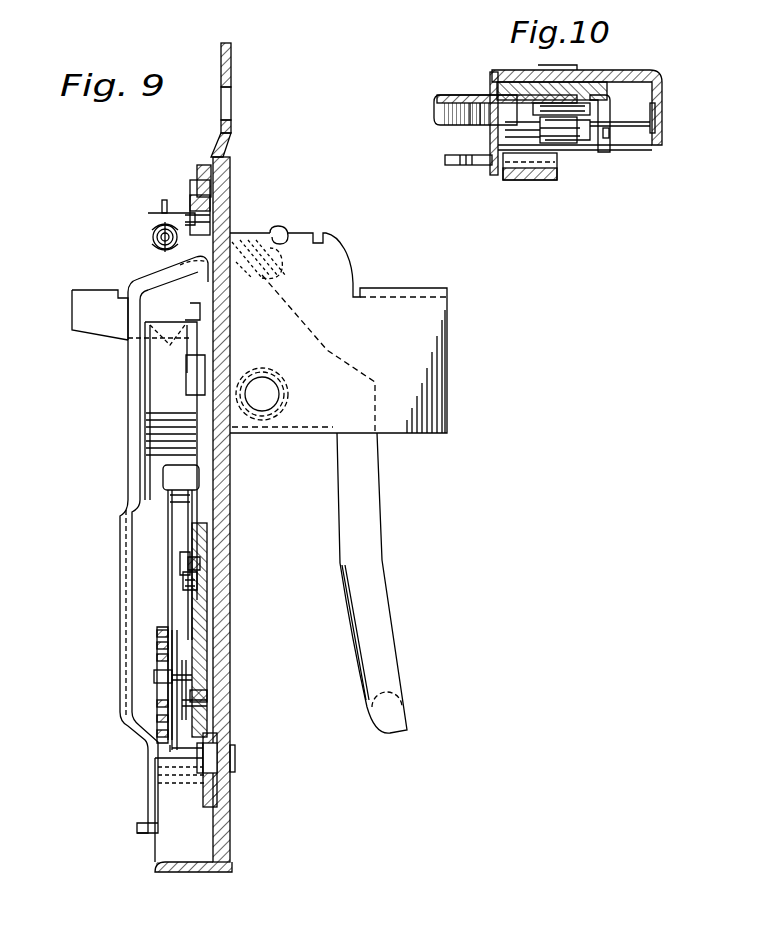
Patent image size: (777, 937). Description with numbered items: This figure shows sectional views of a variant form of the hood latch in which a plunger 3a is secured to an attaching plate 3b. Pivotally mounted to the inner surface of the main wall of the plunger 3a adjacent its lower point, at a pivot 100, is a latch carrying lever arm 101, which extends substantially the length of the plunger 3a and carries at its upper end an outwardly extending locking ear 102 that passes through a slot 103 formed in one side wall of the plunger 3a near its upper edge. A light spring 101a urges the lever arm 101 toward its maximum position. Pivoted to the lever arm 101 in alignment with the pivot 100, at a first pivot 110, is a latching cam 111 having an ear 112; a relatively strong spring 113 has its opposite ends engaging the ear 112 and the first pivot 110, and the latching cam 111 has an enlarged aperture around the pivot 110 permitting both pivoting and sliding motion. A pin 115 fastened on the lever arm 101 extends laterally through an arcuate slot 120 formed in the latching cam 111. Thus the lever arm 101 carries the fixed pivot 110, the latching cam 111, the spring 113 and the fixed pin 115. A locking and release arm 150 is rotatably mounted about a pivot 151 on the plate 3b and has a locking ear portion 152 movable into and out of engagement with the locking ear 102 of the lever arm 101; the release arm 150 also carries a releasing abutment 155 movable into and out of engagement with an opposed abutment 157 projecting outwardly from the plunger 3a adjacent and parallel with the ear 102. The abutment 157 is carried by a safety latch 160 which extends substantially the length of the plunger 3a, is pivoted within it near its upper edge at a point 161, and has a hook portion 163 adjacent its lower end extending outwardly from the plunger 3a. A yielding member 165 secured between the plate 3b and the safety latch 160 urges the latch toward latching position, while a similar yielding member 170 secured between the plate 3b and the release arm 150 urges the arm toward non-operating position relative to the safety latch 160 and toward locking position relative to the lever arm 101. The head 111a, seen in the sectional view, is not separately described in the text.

In FIG. 9, the plunger 3a is at (232, 838).
In FIG. 10, the plunger 3a is at (660, 70).
In FIG. 9, the attaching plate 3b is at (232, 331).
In FIG. 9, the pivot 100 is at (215, 758).
In FIG. 9, the lever arm 101 is at (207, 600).
In FIG. 10, the lever arm 101 is at (598, 80).
In FIG. 9, the light spring 101a is at (170, 752).
In FIG. 10, the light spring 101a is at (636, 120).
In FIG. 9, the locking ear 102 is at (220, 310).
In FIG. 9, the slot 103 is at (197, 365).
In FIG. 9, the pivot 110 is at (157, 672).
In FIG. 10, the pivot 110 is at (566, 145).
In FIG. 9, the latching cam 111 is at (192, 523).
In FIG. 10, the latching cam 111 is at (453, 95).
In FIG. 10, the slide bar head 111a is at (432, 113).
In FIG. 10, the ear 112 is at (603, 150).
In FIG. 9, the spring 113 is at (160, 627).
In FIG. 10, the spring 113 is at (585, 130).
In FIG. 9, the pin 115 is at (188, 565).
In FIG. 9, the arcuate slot 120 is at (185, 578).
In FIG. 9, the locking and release arm 150 is at (365, 505).
In FIG. 9, the pivot 151 is at (266, 408).
In FIG. 9, the locking ear portion 152 is at (97, 290).
In FIG. 9, the releasing abutment 155 is at (100, 338).
In FIG. 9, the abutment 157 is at (130, 384).
In FIG. 9, the safety latch 160 is at (130, 405).
In FIG. 10, the safety latch 160 is at (522, 180).
In FIG. 9, the pivot point 161 is at (190, 200).
In FIG. 9, the hook portion 163 is at (138, 816).
In FIG. 10, the hook portion 163 is at (447, 158).
In FIG. 9, the yielding member 165 is at (152, 238).
In FIG. 9, the yielding member 170 is at (256, 232).